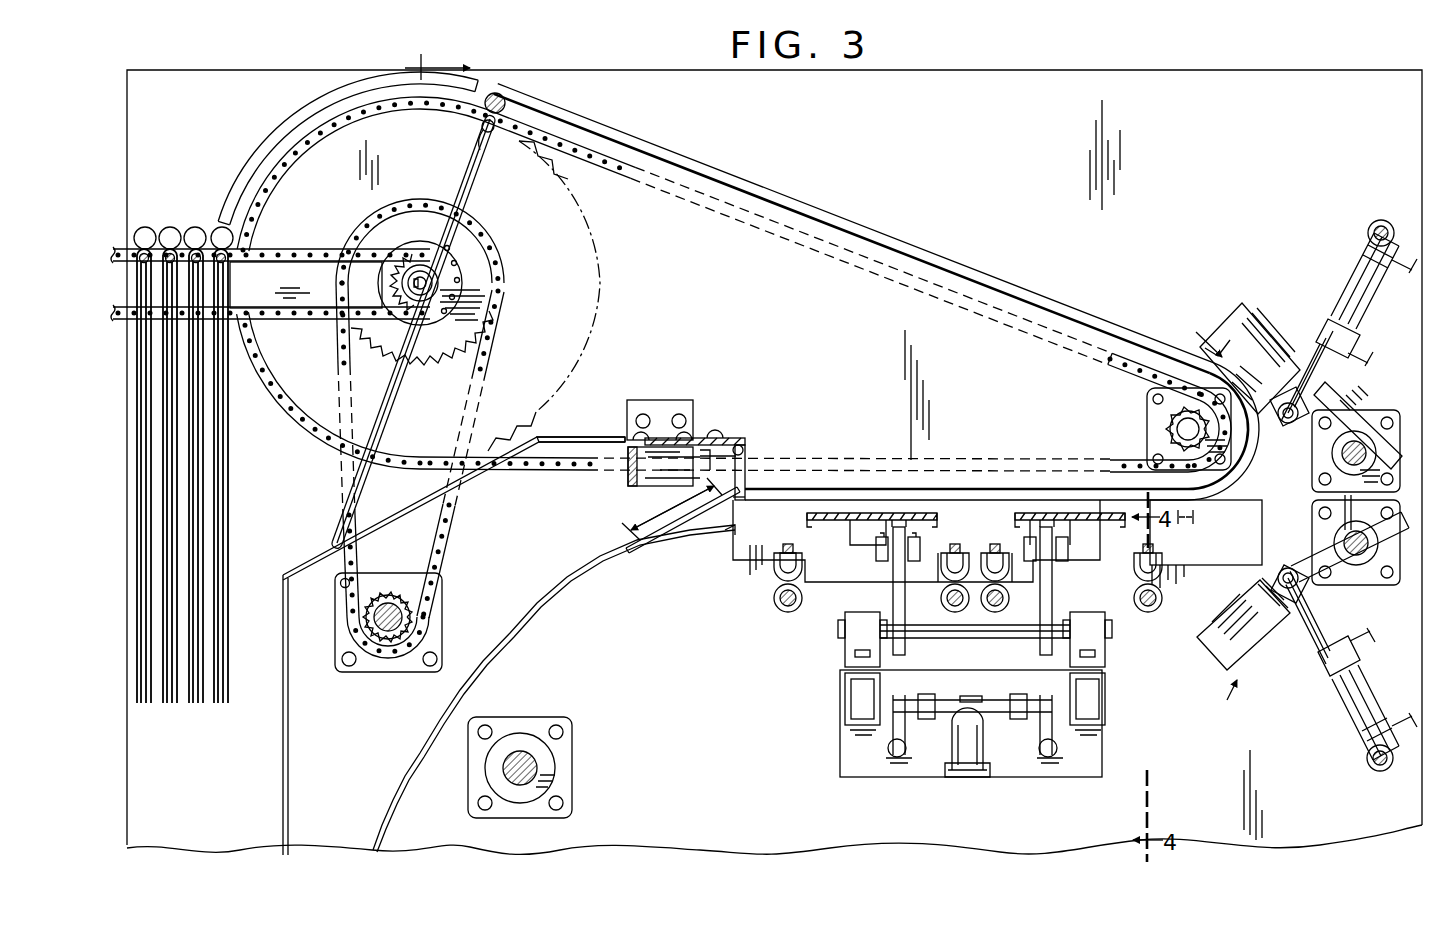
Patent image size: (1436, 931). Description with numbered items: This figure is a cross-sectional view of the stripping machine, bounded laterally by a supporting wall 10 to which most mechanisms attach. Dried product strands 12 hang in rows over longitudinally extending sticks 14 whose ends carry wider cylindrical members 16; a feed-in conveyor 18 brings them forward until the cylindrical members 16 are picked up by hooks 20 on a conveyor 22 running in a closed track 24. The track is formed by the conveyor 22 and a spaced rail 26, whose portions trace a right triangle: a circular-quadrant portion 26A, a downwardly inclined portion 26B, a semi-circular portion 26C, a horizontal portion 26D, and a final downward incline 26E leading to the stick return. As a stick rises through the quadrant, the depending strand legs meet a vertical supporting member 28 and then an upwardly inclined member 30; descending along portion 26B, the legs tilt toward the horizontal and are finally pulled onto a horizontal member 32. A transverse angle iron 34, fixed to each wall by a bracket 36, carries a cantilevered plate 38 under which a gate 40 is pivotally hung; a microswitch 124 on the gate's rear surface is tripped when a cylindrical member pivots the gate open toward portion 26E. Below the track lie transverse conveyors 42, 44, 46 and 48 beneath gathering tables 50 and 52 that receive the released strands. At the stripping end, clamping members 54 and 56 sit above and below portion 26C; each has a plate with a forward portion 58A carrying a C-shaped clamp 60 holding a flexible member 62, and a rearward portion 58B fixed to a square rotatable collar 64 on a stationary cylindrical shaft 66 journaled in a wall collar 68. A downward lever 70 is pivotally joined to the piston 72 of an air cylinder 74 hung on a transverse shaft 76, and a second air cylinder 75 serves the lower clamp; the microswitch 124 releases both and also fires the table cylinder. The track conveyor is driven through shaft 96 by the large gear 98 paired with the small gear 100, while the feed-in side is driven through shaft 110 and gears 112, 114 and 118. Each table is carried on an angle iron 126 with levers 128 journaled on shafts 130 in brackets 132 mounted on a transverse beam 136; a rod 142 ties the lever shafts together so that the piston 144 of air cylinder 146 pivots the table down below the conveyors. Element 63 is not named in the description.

The supporting wall 10 is at (800, 137).
The product strands 12 is at (470, 176).
The sticks 14 is at (146, 238).
The cylindrical members 16 is at (150, 235).
The conveyor 18 is at (312, 262).
The hooks 20 is at (453, 76).
The conveyor 22 is at (1128, 372).
The closed track 24 is at (915, 263).
The rail 26 is at (701, 292).
The rail portion 26A is at (192, 214).
The rail portion 26B is at (890, 233).
The rail portion 26C is at (1240, 431).
The rail portion 26D is at (1012, 300).
The rail portion 26E is at (681, 515).
The vertical supporting member 28 is at (283, 731).
The upwardly inclined member 30 is at (310, 560).
The horizontal member 32 is at (588, 437).
The angle iron 34 is at (628, 475).
The bracket 36 is at (662, 400).
The plate 38 is at (740, 438).
The gate 40 is at (745, 475).
The conveyor 42 is at (774, 600).
The conveyor 44 is at (938, 548).
The conveyor 46 is at (992, 548).
The conveyor 48 is at (1162, 580).
The gathering table 50 is at (807, 518).
The gathering table 52 is at (1084, 520).
The clamping member 54 is at (1291, 490).
The clamping member 56 is at (1233, 700).
The plate forward portion 58A is at (1245, 312).
The plate rearward portion 58B is at (1360, 435).
The C-shaped clamp 60 is at (1228, 322).
The flexible member 62 is at (1200, 331).
The block 63 is at (1210, 656).
The collar 64 is at (1340, 455).
The cylindrical shaft 66 is at (1322, 493).
The collar 68 is at (1320, 500).
The lever 70 is at (1315, 390).
The piston 72 is at (1318, 352).
The air cylinder 74 is at (1355, 258).
The air cylinder 75 is at (1362, 688).
The shaft 76 is at (1378, 220).
The shaft 96 is at (420, 265).
The gear 98 is at (585, 297).
The gear 100 is at (1154, 433).
The shaft 110 is at (388, 640).
The gear 112 is at (410, 618).
The gear 114 is at (472, 272).
The gear 118 is at (392, 283).
The microswitch 124 is at (800, 459).
The angle iron 126 is at (876, 540).
The lever 128 is at (893, 597).
The shaft 130 is at (970, 632).
The bracket 132 is at (850, 640).
The beam 136 is at (845, 711).
The rod 142 is at (1010, 700).
The piston 144 is at (975, 726).
The air cylinder 146 is at (960, 777).